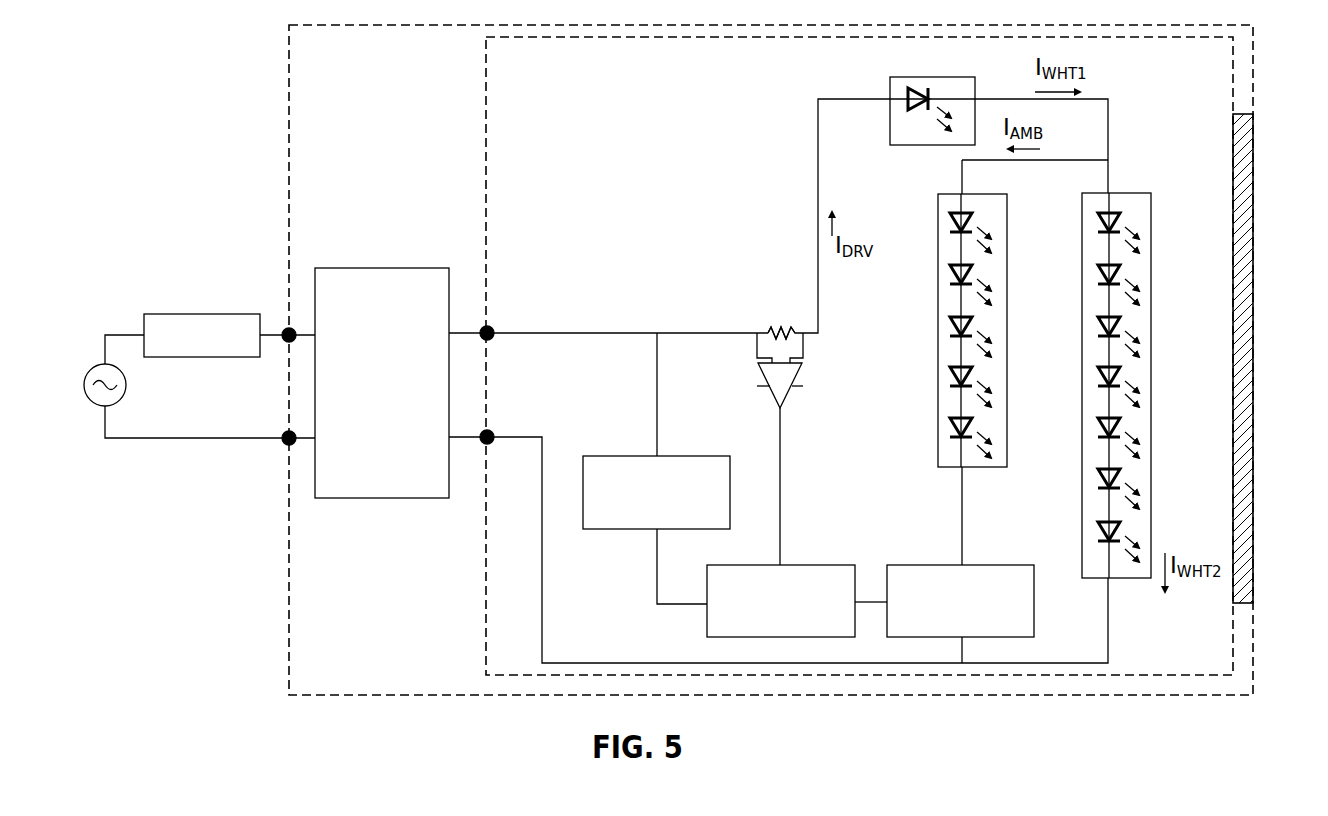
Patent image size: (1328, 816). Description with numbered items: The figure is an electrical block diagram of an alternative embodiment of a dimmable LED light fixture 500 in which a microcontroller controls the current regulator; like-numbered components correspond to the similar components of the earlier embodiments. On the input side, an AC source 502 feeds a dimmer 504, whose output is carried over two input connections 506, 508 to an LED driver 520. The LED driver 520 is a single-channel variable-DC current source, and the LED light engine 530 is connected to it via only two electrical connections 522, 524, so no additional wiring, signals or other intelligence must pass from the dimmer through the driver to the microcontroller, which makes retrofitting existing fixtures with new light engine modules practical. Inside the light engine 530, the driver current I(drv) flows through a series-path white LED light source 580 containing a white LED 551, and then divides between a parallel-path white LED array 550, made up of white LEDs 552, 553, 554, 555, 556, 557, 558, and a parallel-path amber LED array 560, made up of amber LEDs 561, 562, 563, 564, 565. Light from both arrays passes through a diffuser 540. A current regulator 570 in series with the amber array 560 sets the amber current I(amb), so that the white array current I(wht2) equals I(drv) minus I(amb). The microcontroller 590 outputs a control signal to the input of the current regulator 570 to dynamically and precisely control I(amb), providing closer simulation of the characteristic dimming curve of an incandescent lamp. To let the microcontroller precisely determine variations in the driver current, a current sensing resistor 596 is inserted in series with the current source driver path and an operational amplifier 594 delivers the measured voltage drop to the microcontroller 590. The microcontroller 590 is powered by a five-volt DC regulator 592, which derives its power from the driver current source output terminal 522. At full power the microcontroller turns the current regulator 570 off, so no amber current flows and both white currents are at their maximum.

The dimmable LED light fixture circuit 500 is at (289, 72).
The AC power source 502 is at (119, 400).
The dimmer 504 is at (160, 314).
The first input node 506 is at (285, 342).
The second input node 508 is at (285, 434).
The LED driver 520 is at (392, 267).
The LED driver current source output terminal 522 is at (492, 339).
The electrical connection 524 is at (492, 432).
The LED light engine 530 is at (486, 80).
The diffuser / optical element 540 is at (1244, 157).
The parallel-path white LED array 550 is at (1140, 193).
The photodiode 551 is at (918, 112).
The white LED 552 is at (1125, 222).
The white LED 553 is at (1125, 274).
The white LED 554 is at (1125, 326).
The white LED 555 is at (1125, 376).
The white LED 556 is at (1125, 427).
The white LED 557 is at (1125, 478).
The white LED 558 is at (1125, 531).
The amber LED array 560 is at (997, 195).
The amber LED 561 is at (977, 222).
The amber LED 562 is at (977, 274).
The amber LED 563 is at (977, 326).
The amber LED 564 is at (977, 376).
The amber LED 565 is at (977, 427).
The current regulator 570 is at (996, 565).
The series-path white LED light source 580 is at (958, 118).
The microcontroller 590 is at (835, 565).
The 5 VDC regulator 592 is at (693, 456).
The operational amplifier 594 is at (789, 391).
The current sensing resistor 596 is at (775, 326).